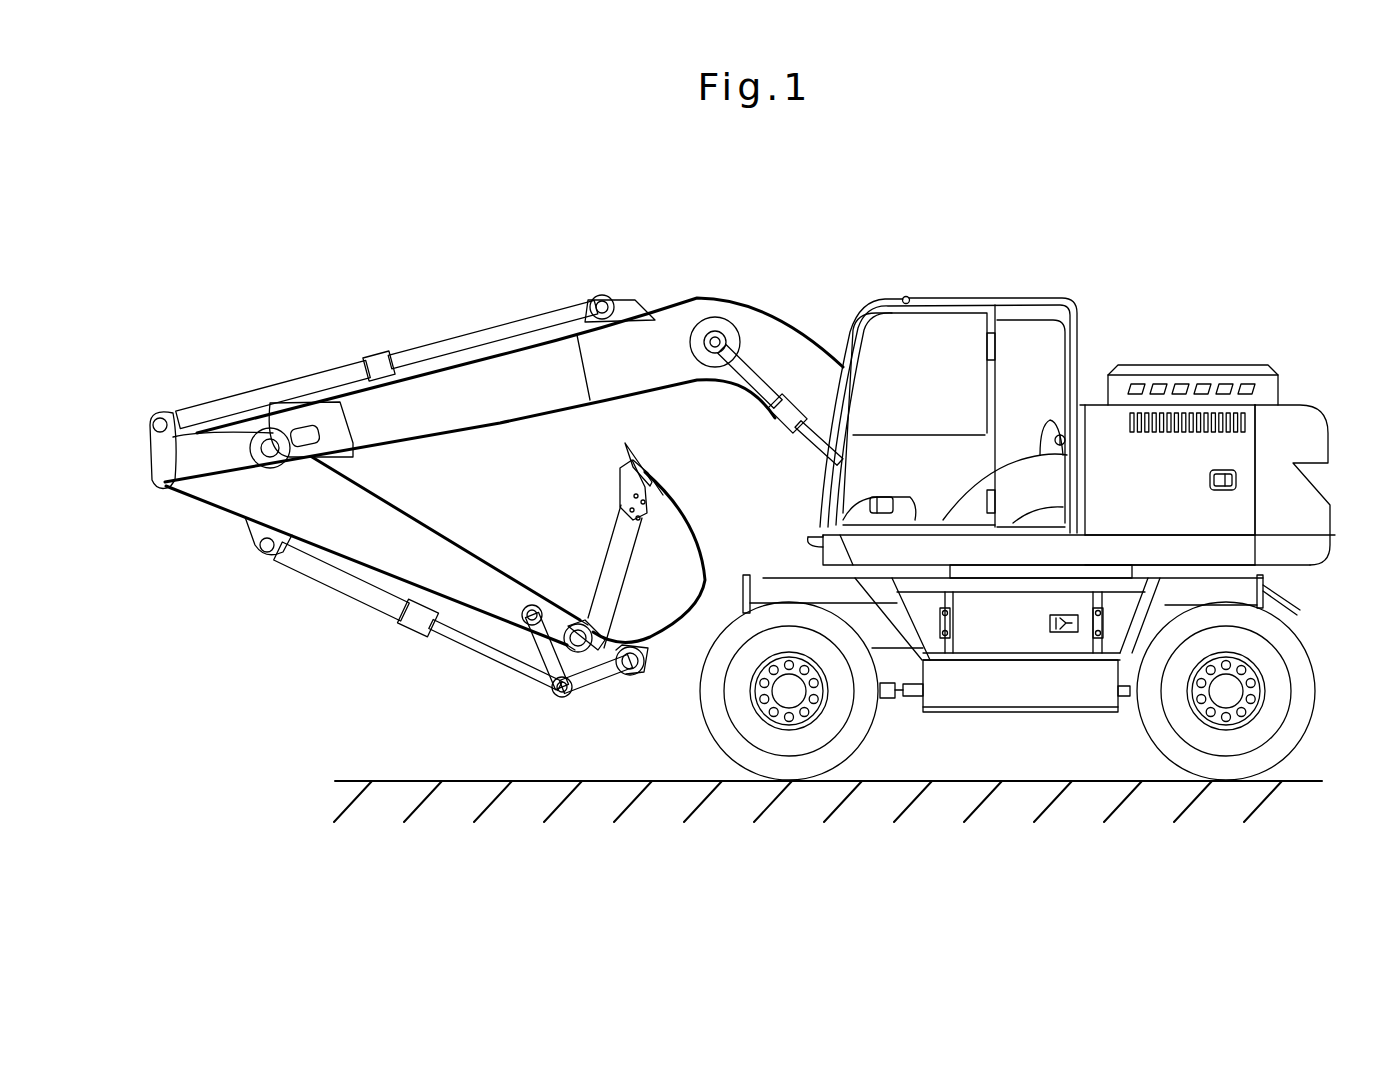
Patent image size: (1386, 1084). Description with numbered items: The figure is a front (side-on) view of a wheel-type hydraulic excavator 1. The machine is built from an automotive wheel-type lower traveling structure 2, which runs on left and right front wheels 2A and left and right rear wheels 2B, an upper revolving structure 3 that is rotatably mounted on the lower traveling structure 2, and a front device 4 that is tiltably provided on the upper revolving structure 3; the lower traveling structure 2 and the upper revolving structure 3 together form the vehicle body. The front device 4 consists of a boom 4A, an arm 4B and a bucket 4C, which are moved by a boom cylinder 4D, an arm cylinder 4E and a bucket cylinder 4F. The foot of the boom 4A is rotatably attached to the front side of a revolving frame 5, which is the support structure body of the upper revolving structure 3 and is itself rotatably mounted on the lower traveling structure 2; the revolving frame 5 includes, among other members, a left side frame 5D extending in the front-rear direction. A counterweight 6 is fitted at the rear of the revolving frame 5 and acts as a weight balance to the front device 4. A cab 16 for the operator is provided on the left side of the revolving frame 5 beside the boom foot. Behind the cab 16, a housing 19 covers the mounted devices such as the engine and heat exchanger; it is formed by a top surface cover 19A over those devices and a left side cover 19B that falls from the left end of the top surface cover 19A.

The hydraulic excavator 1 is at (817, 262).
The lower traveling structure 2 is at (1032, 685).
The front wheels 2A is at (789, 742).
The rear wheels 2B is at (1211, 742).
The upper revolving structure 3 is at (1042, 283).
The front device 4 is at (645, 358).
The boom 4A is at (515, 380).
The arm 4B is at (478, 590).
The bucket 4C is at (657, 580).
The boom cylinder 4D is at (790, 425).
The arm cylinder 4E is at (433, 352).
The bucket cylinder 4F is at (348, 585).
The revolving frame 5 is at (867, 550).
The left side frame 5D is at (1227, 553).
The counterweight 6 is at (1290, 443).
The cab 16 is at (952, 320).
The housing 19 is at (1093, 388).
The top surface cover 19A is at (1183, 403).
The left side cover 19B is at (1248, 463).